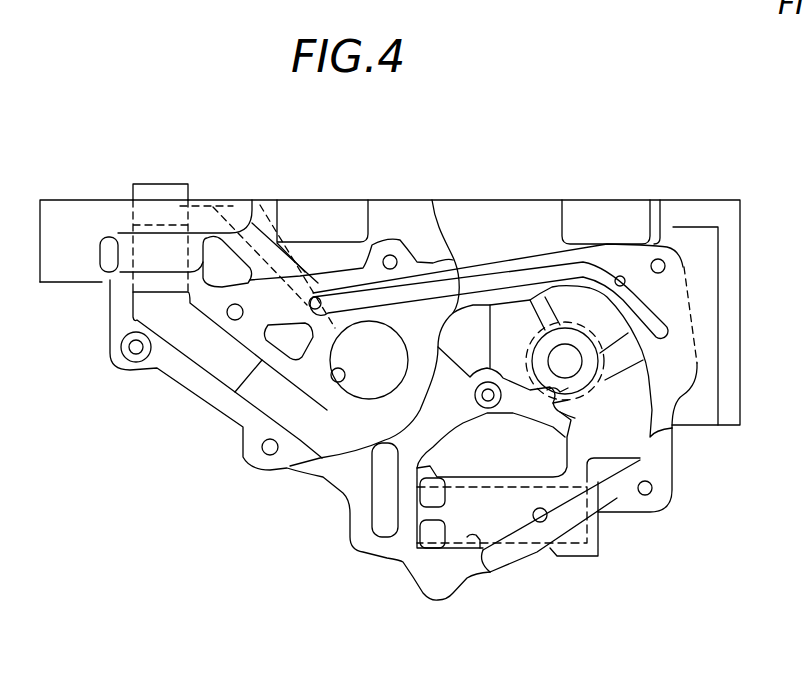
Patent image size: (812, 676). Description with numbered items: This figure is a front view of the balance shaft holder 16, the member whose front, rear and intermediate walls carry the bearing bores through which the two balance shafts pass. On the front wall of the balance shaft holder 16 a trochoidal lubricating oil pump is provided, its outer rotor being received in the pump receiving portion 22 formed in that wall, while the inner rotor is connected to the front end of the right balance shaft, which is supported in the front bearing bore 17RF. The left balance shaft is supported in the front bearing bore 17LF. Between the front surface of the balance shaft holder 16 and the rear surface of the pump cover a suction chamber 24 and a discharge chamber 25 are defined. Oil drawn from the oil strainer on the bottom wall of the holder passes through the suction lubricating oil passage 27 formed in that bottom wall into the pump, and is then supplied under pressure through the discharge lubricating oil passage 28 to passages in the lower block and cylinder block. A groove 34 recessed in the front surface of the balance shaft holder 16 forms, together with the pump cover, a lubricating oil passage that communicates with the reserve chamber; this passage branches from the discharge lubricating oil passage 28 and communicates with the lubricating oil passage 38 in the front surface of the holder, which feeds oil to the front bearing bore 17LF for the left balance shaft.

The balance shaft holder 16 is at (512, 200).
The discharge lubricating oil passage 28 is at (147, 182).
The lubricating oil passage 38 is at (261, 192).
The discharge chamber 25 is at (432, 200).
The groove 34 is at (622, 280).
The pump receiving portion 22 is at (593, 388).
The front bearing bore for the right balance shaft 17RF is at (573, 417).
The front bearing bore for the left balance shaft 17LF is at (336, 379).
The suction chamber 24 is at (622, 508).
The suction lubricating oil passage 27 is at (480, 560).